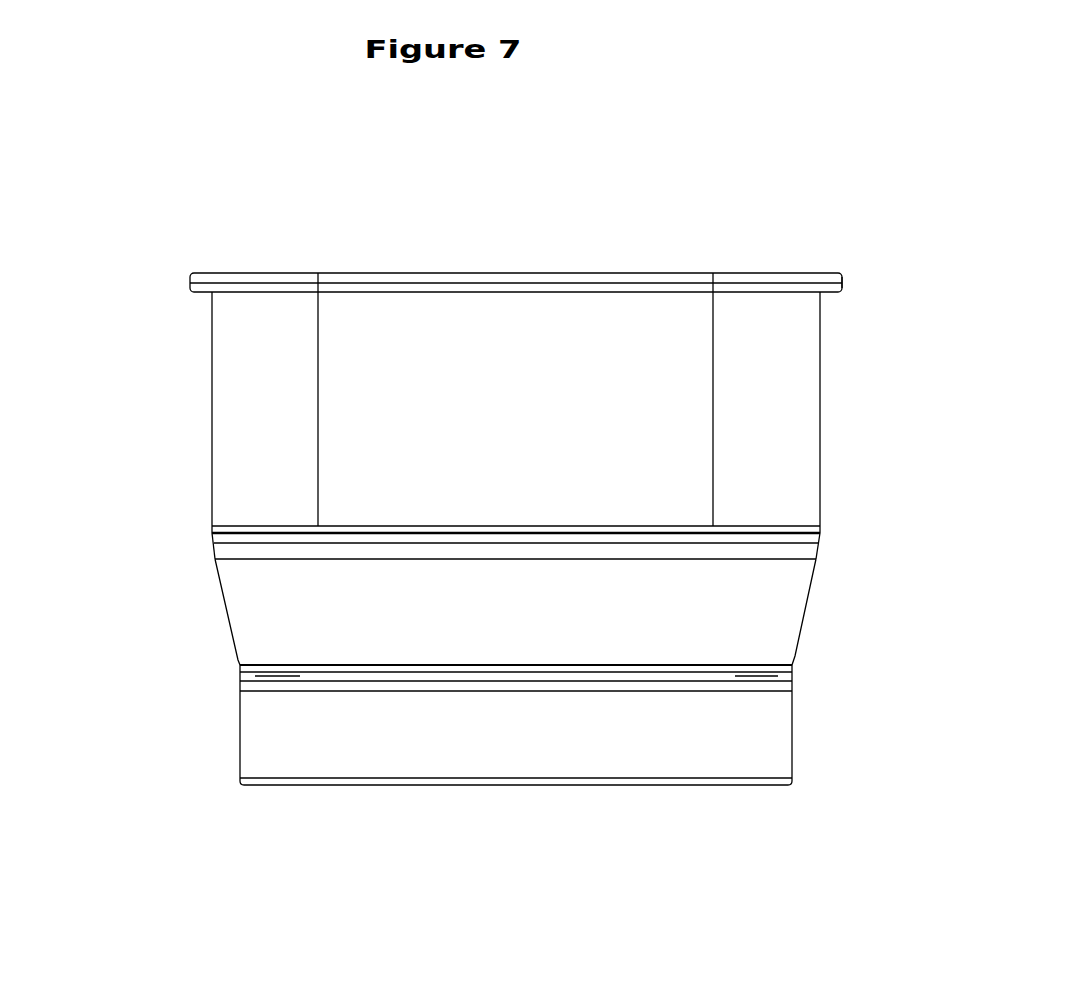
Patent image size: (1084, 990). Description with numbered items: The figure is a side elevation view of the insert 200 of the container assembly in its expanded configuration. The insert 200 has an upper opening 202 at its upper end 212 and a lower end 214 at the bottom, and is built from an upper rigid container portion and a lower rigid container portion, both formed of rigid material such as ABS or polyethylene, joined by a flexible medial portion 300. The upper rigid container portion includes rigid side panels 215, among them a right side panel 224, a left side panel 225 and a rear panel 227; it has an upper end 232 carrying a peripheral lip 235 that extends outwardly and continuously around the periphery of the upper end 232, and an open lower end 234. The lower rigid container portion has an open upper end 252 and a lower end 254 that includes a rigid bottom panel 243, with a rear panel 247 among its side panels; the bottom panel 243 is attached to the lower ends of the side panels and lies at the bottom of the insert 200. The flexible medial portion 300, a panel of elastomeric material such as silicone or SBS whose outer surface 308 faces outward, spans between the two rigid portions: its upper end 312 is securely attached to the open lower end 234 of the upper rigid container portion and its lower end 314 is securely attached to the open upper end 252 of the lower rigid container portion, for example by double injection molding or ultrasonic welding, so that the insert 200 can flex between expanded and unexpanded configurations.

The insert 200 is at (633, 835).
The upper opening 202 is at (556, 268).
The upper end 212 is at (192, 280).
The lower end 214 is at (240, 779).
The rigid side panels 215 is at (262, 437).
The right side panel 224 is at (820, 373).
The left side panel 225 is at (212, 375).
The rear panel 227 is at (767, 432).
The upper end 232 is at (842, 287).
The lower end 234 is at (820, 515).
The peripheral lip 235 is at (762, 274).
The bottom panel 243 is at (481, 789).
The rear panel 247 is at (382, 733).
The upper end 252 is at (792, 697).
The lower end 254 is at (792, 780).
The flexible medial portion 300 is at (235, 631).
The outer surface 308 is at (265, 592).
The upper end 312 is at (814, 573).
The lower end 314 is at (795, 656).